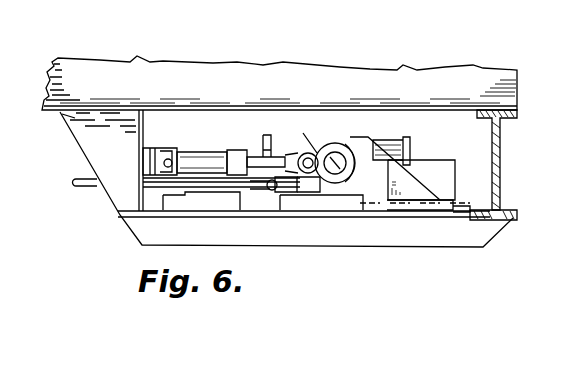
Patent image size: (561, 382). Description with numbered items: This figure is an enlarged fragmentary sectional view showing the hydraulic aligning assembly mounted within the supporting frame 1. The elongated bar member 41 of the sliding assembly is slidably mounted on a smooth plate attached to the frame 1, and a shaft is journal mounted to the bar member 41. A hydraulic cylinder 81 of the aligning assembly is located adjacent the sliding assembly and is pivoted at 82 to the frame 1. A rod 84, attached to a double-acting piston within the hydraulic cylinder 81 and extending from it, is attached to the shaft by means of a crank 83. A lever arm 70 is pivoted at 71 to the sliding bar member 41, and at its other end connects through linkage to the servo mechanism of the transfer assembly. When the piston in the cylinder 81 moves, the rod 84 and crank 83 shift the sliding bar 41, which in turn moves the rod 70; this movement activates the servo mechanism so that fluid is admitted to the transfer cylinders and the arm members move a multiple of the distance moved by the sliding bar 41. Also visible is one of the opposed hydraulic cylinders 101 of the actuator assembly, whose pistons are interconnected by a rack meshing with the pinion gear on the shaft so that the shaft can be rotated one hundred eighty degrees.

The supporting frame 1 is at (117, 197).
The elongated bar member 41 is at (407, 185).
The lever arm 70 is at (93, 168).
The pivot 71 is at (271, 191).
The hydraulic cylinder 81 is at (200, 153).
The pivot 82 is at (168, 159).
The crank 83 is at (333, 150).
The rod 84 is at (317, 185).
The hydraulic cylinder 101 is at (391, 142).